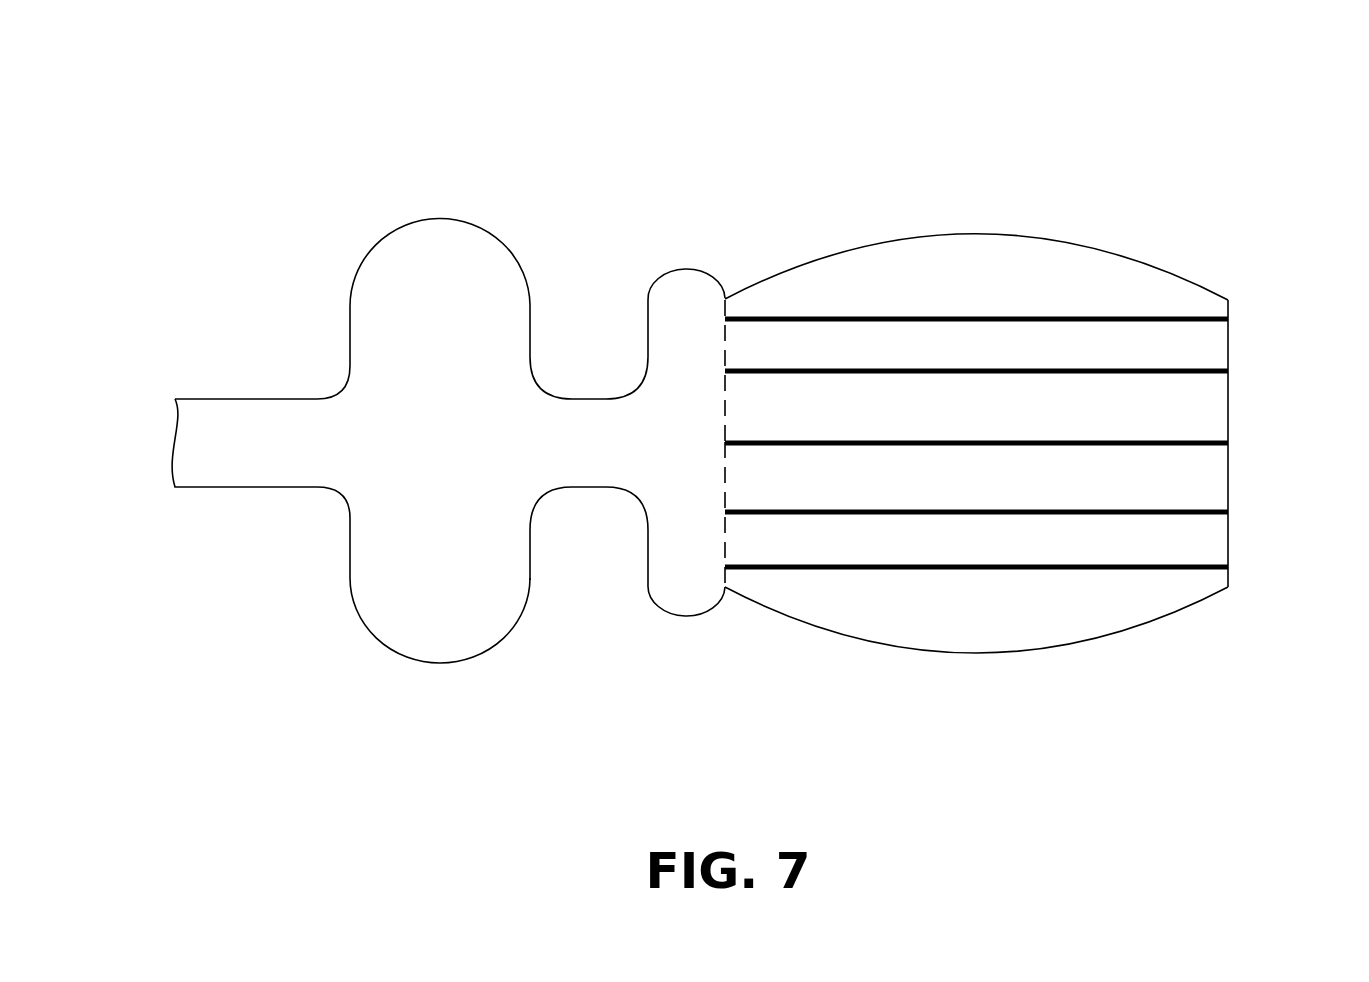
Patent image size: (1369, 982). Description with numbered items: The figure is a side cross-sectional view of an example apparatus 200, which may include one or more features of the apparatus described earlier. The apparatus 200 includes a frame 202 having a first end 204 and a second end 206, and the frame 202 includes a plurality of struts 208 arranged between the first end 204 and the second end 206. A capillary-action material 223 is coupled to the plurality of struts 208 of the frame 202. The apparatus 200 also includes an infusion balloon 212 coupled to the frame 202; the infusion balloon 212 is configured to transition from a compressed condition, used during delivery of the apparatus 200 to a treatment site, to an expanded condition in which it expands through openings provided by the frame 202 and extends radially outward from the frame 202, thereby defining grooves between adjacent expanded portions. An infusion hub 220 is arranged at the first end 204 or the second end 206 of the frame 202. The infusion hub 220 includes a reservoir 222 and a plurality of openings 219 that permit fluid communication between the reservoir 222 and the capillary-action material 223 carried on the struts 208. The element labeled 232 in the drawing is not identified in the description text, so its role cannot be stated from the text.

The apparatus 200 is at (1172, 99).
The frame 202 is at (1230, 403).
The first end 204 is at (706, 484).
The second end 206 is at (1242, 498).
The struts 208 is at (932, 300).
The infusion balloon 212 is at (1040, 268).
The openings 219 is at (706, 357).
The infusion hub 220 is at (686, 268).
The reservoir 222 is at (690, 575).
The capillary-action material 223 is at (835, 318).
The balloon 232 is at (445, 220).